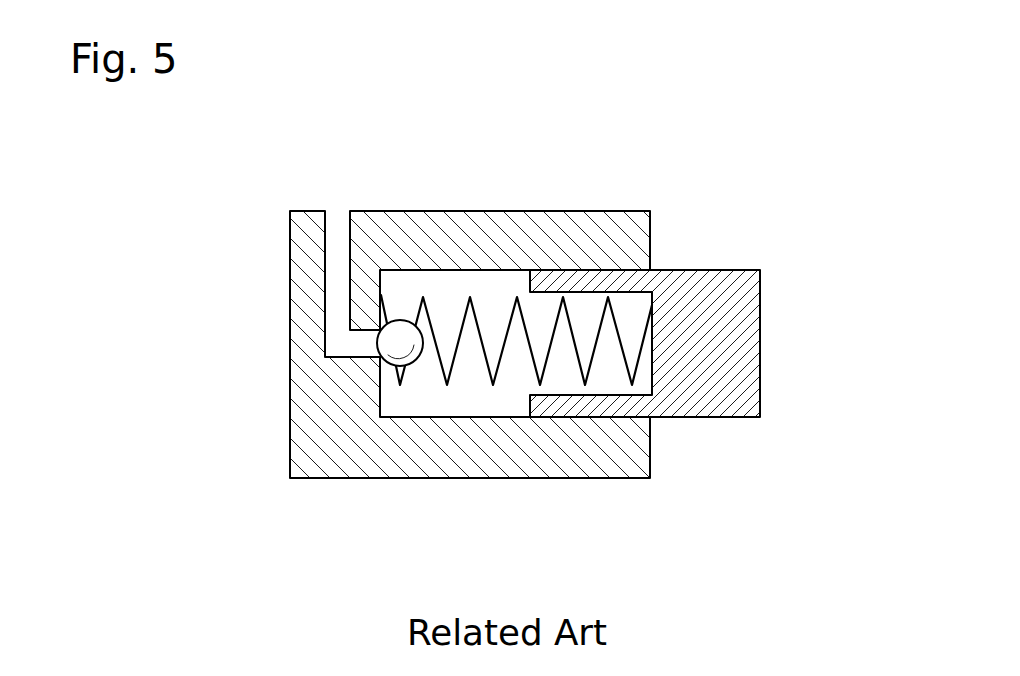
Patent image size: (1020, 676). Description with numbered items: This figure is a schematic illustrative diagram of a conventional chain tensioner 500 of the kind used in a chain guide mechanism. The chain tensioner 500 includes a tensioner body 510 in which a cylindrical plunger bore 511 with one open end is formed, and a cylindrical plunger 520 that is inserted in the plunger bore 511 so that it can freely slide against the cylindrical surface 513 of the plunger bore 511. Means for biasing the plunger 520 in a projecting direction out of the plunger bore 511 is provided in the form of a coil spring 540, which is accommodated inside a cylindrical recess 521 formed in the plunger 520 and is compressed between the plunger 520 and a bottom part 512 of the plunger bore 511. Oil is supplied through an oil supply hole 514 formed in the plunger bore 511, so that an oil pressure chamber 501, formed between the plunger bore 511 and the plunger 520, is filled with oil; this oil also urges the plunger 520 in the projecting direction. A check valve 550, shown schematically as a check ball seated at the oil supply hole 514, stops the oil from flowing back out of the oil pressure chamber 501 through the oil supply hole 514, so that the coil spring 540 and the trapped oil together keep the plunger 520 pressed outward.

The chain tensioner 500 is at (759, 122).
The oil pressure chamber 501 is at (487, 393).
The tensioner body 510 is at (411, 455).
The plunger bore 511 is at (520, 148).
The bottom part 512 is at (383, 290).
The cylindrical surface 513 is at (512, 271).
The oil supply hole 514 is at (338, 211).
The plunger 520 is at (743, 368).
The cylindrical recess 521 is at (607, 304).
The coil spring 540 is at (593, 357).
The check valve 550 is at (377, 343).